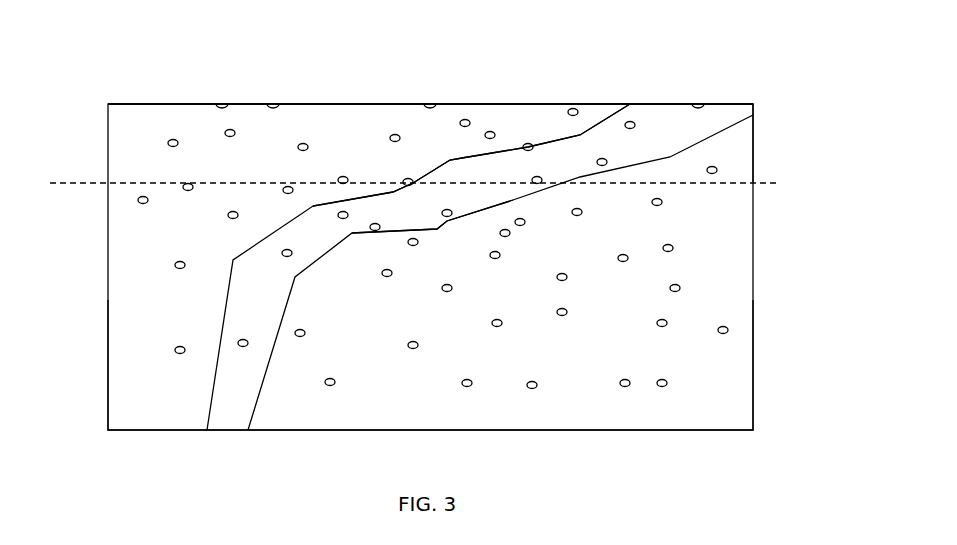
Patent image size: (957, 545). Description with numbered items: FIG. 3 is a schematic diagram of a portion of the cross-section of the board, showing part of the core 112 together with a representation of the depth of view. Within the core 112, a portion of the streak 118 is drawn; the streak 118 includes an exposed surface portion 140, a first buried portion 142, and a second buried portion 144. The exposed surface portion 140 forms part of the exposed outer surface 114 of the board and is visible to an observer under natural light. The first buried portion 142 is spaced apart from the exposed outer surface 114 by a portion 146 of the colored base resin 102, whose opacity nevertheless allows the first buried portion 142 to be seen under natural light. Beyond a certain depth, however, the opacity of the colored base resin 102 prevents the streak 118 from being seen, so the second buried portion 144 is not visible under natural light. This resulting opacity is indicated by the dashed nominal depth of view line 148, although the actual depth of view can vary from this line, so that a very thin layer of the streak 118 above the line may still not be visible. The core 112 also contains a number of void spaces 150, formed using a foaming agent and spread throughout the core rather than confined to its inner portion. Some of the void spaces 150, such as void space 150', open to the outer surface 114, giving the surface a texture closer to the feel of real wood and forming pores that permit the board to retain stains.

The colored base resin 102 is at (133, 360).
The core 112 is at (82, 124).
The exposed outer surface 114 is at (165, 104).
The streak 118 is at (732, 88).
The exposed surface portion 140 is at (642, 104).
The first buried portion 142 is at (462, 158).
The second buried portion 144 is at (313, 206).
The portion of the colored base resin 146 is at (435, 130).
The nominal depth of view line 148 is at (780, 183).
The void spaces 150 is at (481, 246).
The void space 150' is at (244, 68).